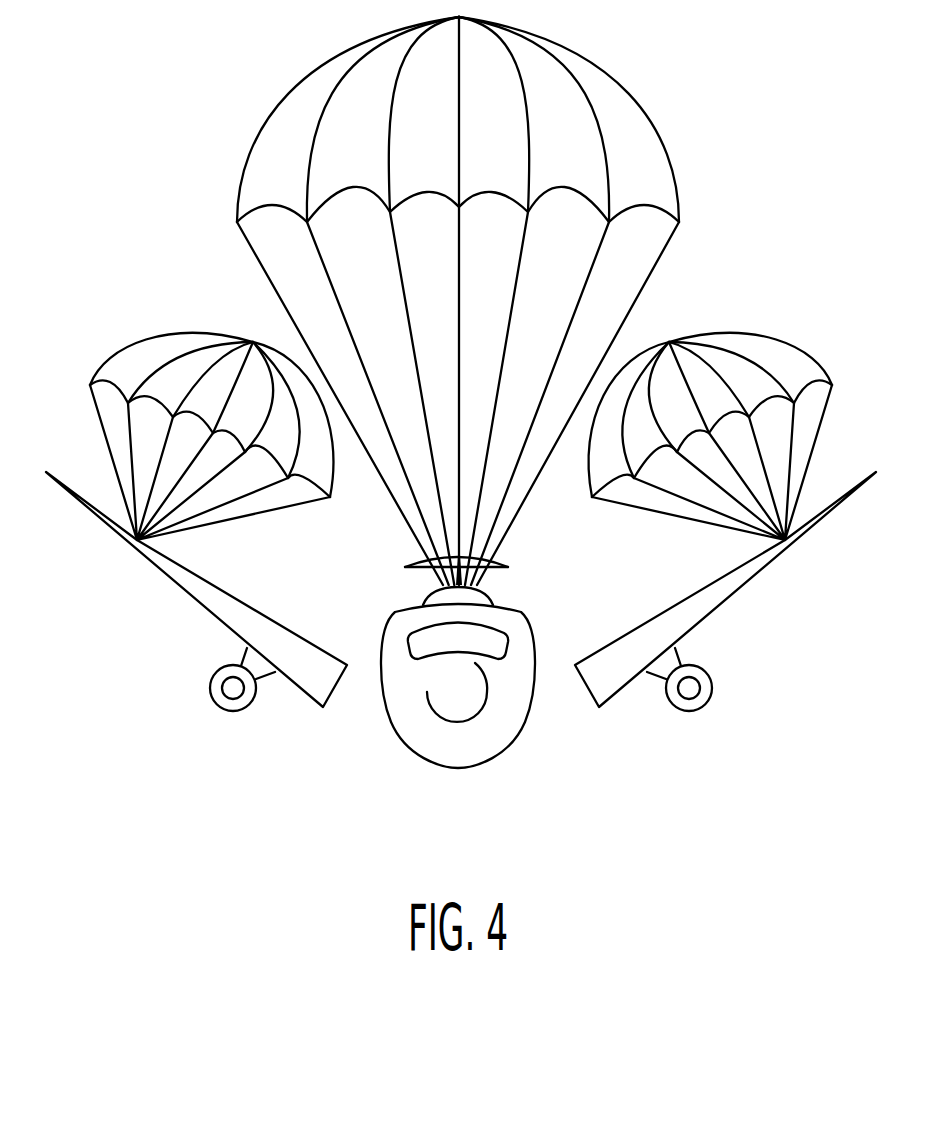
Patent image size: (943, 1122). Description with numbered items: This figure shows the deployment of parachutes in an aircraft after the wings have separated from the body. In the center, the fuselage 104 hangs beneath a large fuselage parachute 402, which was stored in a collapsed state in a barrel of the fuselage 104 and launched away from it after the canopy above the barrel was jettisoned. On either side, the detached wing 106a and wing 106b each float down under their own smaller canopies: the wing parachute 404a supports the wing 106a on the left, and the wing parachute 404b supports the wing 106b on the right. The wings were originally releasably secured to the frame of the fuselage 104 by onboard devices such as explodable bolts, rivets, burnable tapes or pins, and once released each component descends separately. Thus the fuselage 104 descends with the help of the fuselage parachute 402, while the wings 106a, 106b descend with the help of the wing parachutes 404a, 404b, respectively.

The fuselage parachute 402 is at (624, 92).
The wing parachute 404a is at (118, 347).
The wing parachute 404b is at (763, 328).
The wing 106a is at (190, 600).
The wing 106b is at (730, 600).
The fuselage 104 is at (400, 737).